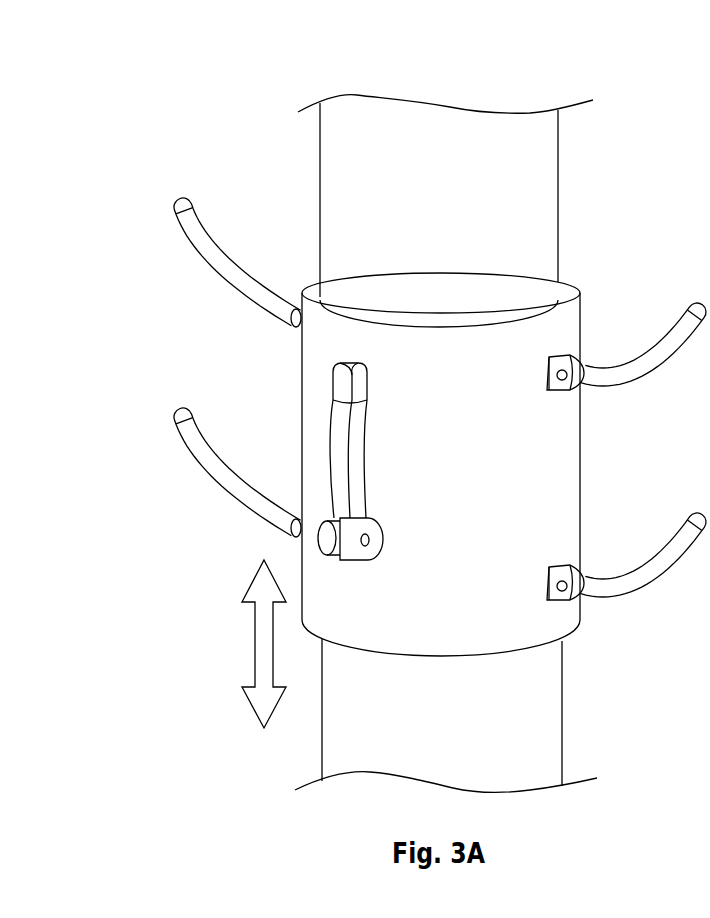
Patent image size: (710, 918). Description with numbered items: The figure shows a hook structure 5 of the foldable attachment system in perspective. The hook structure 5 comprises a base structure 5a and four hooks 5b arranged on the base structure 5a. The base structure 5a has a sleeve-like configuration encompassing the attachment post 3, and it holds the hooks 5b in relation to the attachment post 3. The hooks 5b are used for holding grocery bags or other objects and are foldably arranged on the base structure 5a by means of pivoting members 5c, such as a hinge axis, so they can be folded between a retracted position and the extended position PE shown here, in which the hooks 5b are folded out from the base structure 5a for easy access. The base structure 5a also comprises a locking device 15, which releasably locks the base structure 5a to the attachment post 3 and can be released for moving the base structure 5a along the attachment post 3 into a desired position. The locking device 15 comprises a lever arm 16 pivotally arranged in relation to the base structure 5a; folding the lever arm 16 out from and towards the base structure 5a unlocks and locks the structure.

The attachment post 3 is at (393, 213).
The hook structure 5 is at (195, 165).
The base structure 5a is at (333, 385).
The hooks 5b is at (217, 255).
The pivoting members 5c is at (562, 382).
The locking device 15 is at (303, 357).
The lever arm 16 is at (337, 452).
The extended position PE is at (222, 93).